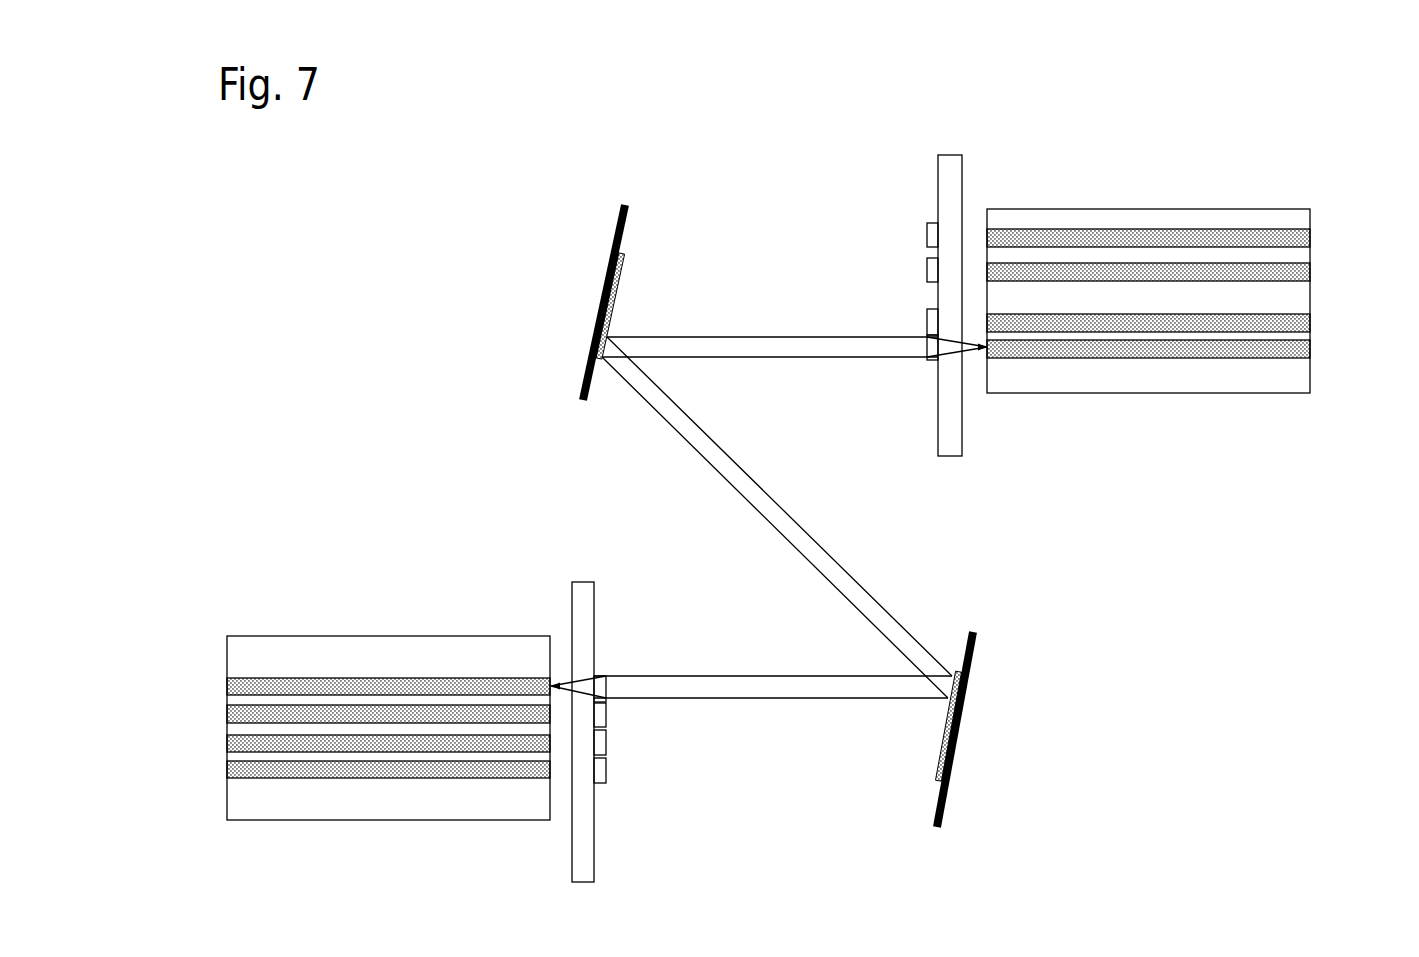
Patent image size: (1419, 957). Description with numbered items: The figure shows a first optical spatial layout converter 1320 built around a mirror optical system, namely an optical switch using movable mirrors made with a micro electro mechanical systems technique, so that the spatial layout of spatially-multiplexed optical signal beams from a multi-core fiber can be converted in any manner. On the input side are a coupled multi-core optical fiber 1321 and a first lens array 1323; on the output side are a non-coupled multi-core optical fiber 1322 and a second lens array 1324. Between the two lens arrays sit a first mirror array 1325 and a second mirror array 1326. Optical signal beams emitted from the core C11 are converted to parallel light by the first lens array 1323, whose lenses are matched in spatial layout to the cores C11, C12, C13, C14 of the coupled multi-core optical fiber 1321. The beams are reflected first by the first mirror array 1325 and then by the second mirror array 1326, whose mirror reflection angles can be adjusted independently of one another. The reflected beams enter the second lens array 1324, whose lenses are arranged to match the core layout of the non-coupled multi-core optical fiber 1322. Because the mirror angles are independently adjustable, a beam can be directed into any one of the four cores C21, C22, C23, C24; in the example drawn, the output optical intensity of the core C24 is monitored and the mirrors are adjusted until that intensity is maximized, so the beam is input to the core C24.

The first optical spatial layout converter 1320 is at (735, 130).
The coupled multi-core optical fiber 1321 is at (398, 636).
The non-coupled multi-core optical fiber 1322 is at (1170, 209).
The first lens array 1323 is at (595, 863).
The second lens array 1324 is at (938, 427).
The first mirror array 1325 is at (940, 812).
The second mirror array 1326 is at (583, 380).
The core C11 is at (227, 687).
The core C12 is at (227, 713).
The core C13 is at (227, 745).
The core C14 is at (227, 775).
The core C21 is at (1310, 237).
The core C22 is at (1310, 273).
The core C23 is at (1310, 321).
The core C24 is at (1310, 348).